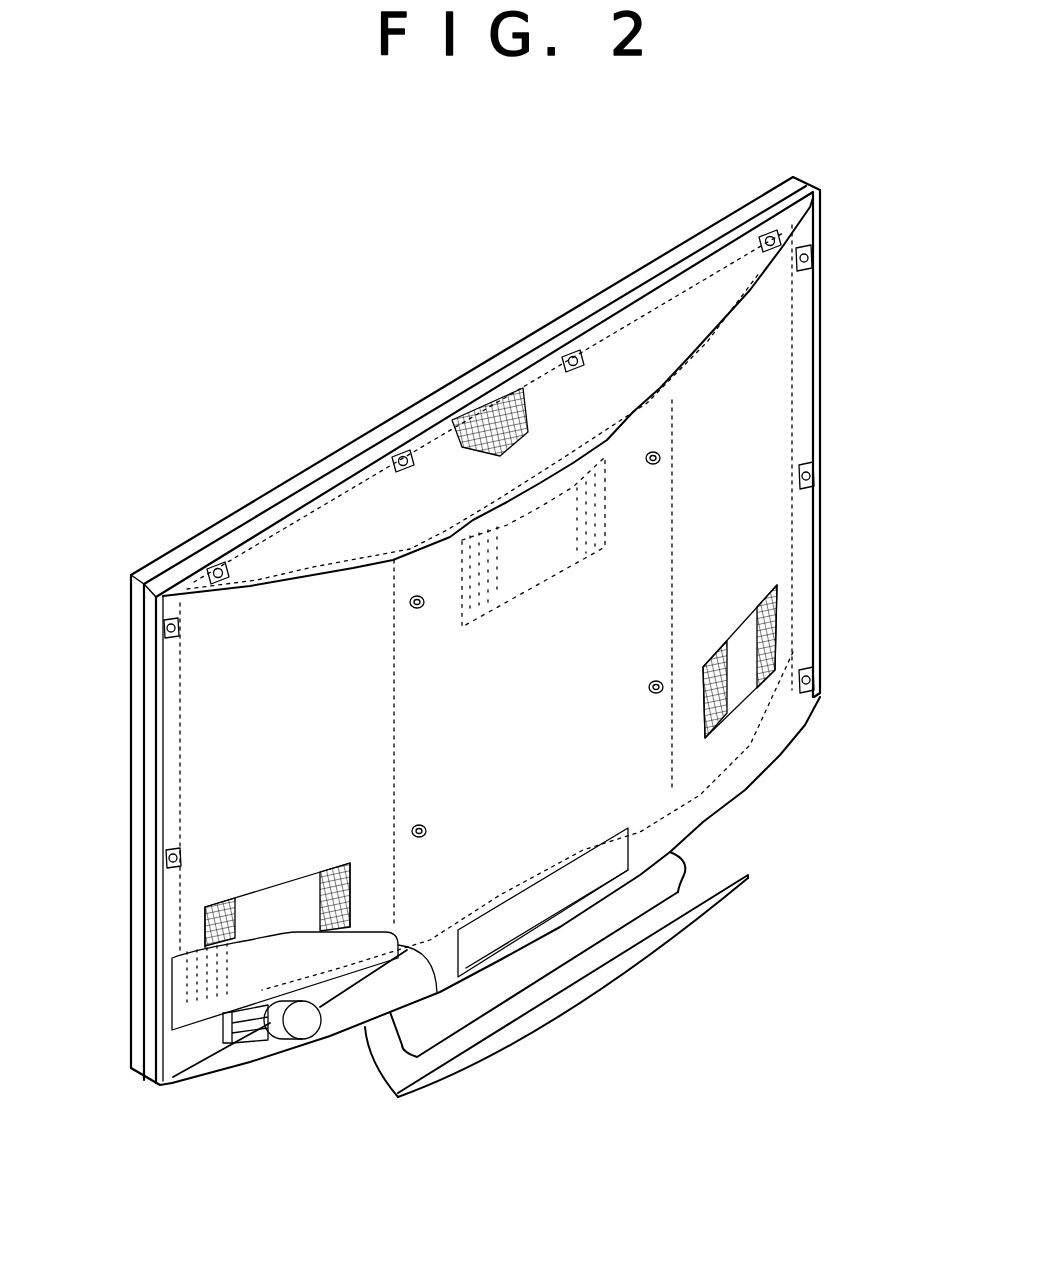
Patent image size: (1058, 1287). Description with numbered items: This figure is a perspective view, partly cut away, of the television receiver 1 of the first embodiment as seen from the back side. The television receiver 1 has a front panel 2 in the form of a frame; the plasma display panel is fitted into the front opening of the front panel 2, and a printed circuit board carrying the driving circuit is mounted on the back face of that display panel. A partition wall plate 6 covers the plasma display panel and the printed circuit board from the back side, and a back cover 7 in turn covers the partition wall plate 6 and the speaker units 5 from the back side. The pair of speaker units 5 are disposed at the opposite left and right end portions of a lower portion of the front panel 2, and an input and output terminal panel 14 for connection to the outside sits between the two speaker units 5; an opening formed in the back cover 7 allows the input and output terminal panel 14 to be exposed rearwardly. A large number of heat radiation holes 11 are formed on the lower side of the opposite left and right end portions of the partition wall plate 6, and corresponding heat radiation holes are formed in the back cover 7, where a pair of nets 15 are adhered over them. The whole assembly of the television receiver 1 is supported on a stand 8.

The television receiver 1 is at (481, 671).
The front panel 2 is at (182, 546).
The speaker units 5 is at (318, 1026).
The partition wall plate 6 is at (792, 343).
The back cover 7 is at (762, 420).
The stand 8 is at (704, 876).
The heat radiation holes 11 is at (170, 991).
The input and output terminal panel 14 is at (537, 908).
The nets 15 is at (777, 637).